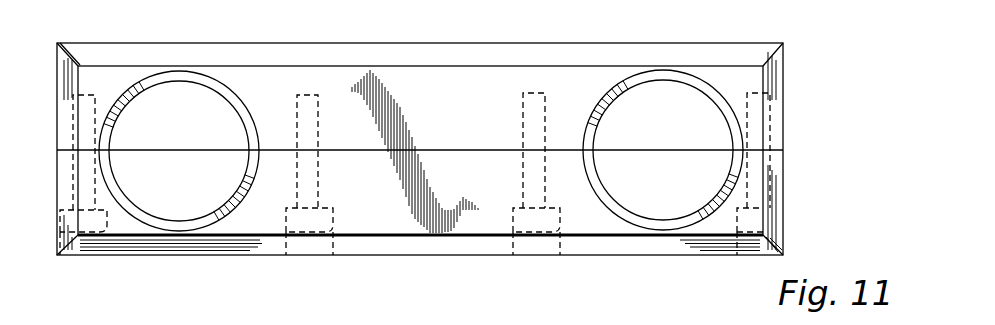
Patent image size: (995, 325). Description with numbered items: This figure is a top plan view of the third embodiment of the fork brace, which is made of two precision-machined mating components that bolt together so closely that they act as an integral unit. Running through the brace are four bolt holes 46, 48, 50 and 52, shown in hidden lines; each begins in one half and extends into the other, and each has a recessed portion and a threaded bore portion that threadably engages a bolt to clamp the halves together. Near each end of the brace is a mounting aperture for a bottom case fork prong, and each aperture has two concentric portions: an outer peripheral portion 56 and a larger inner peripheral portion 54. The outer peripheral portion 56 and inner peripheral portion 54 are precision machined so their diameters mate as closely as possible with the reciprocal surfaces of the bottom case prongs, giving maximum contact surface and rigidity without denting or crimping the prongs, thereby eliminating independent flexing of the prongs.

The bolt hole 46 is at (743, 257).
The bolt hole 48 is at (515, 248).
The bolt hole 50 is at (297, 247).
The bolt hole 52 is at (88, 245).
The inner peripheral portion 54 is at (178, 84).
The outer peripheral portion 56 is at (216, 79).